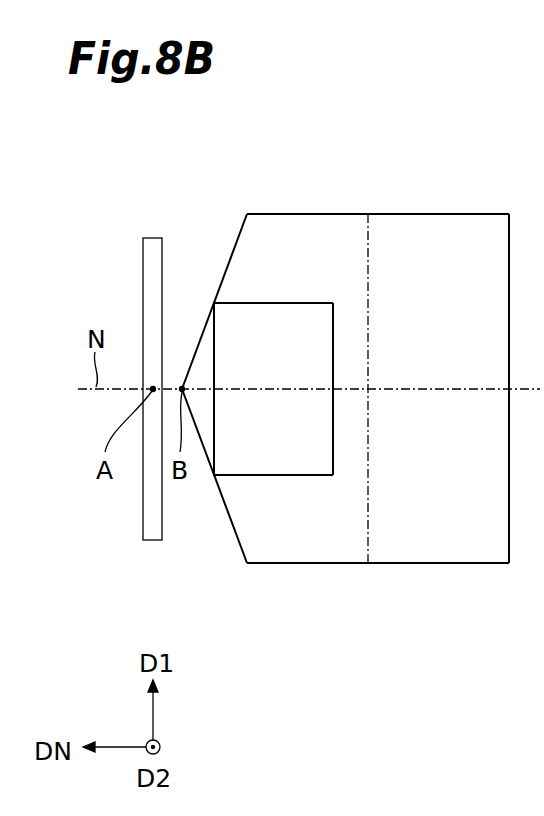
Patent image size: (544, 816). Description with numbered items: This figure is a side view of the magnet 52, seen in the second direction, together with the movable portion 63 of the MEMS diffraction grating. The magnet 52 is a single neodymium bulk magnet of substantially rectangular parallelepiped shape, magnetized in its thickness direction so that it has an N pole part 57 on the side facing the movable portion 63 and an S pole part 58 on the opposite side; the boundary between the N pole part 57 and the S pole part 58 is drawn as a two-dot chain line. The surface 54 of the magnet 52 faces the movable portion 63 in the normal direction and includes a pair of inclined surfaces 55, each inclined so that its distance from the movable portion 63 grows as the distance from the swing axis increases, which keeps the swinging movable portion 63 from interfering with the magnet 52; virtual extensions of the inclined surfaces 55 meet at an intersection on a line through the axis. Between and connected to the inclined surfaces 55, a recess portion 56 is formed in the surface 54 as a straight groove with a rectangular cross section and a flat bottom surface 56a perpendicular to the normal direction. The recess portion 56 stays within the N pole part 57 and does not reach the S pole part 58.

The magnet 52 is at (339, 396).
The surface 54 is at (211, 418).
The inclined surfaces 55 is at (228, 261).
The recess portion 56 is at (286, 398).
The bottom surface 56a is at (333, 443).
The N pole part 57 is at (331, 232).
The S pole part 58 is at (409, 232).
The movable portion 63 is at (142, 312).